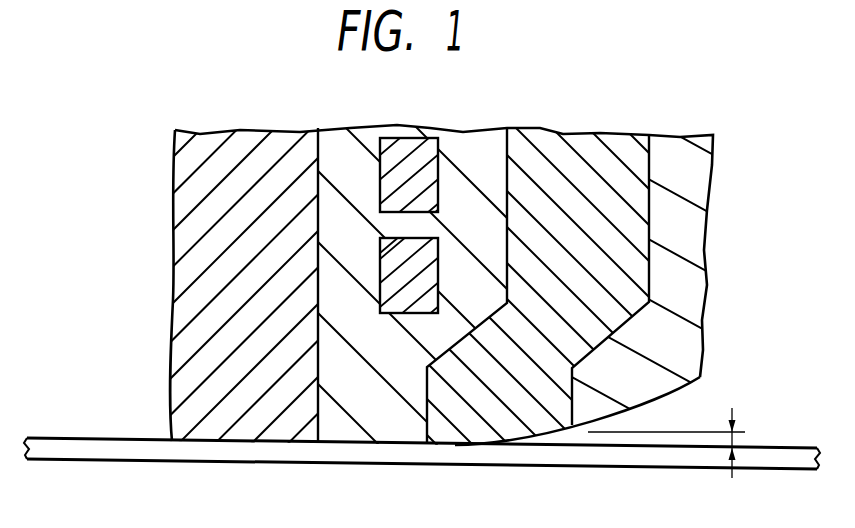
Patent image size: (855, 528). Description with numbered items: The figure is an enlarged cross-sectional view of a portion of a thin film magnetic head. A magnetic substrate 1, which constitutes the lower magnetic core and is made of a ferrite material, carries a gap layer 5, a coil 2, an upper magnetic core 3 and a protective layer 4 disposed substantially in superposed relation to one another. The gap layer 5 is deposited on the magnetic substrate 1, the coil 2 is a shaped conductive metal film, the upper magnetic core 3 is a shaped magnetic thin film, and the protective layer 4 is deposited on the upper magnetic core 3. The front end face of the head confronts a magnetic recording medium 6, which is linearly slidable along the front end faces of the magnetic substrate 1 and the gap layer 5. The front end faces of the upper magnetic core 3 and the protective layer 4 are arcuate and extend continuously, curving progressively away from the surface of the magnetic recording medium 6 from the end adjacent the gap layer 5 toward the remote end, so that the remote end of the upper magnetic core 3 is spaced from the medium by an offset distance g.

The magnetic substrate 1 is at (193, 370).
The coil 2 is at (413, 157).
The upper magnetic core 3 is at (575, 163).
The protective layer 4 is at (643, 382).
The gap layer 5 is at (395, 413).
The magnetic recording medium 6 is at (252, 450).
The offset distance g is at (733, 440).